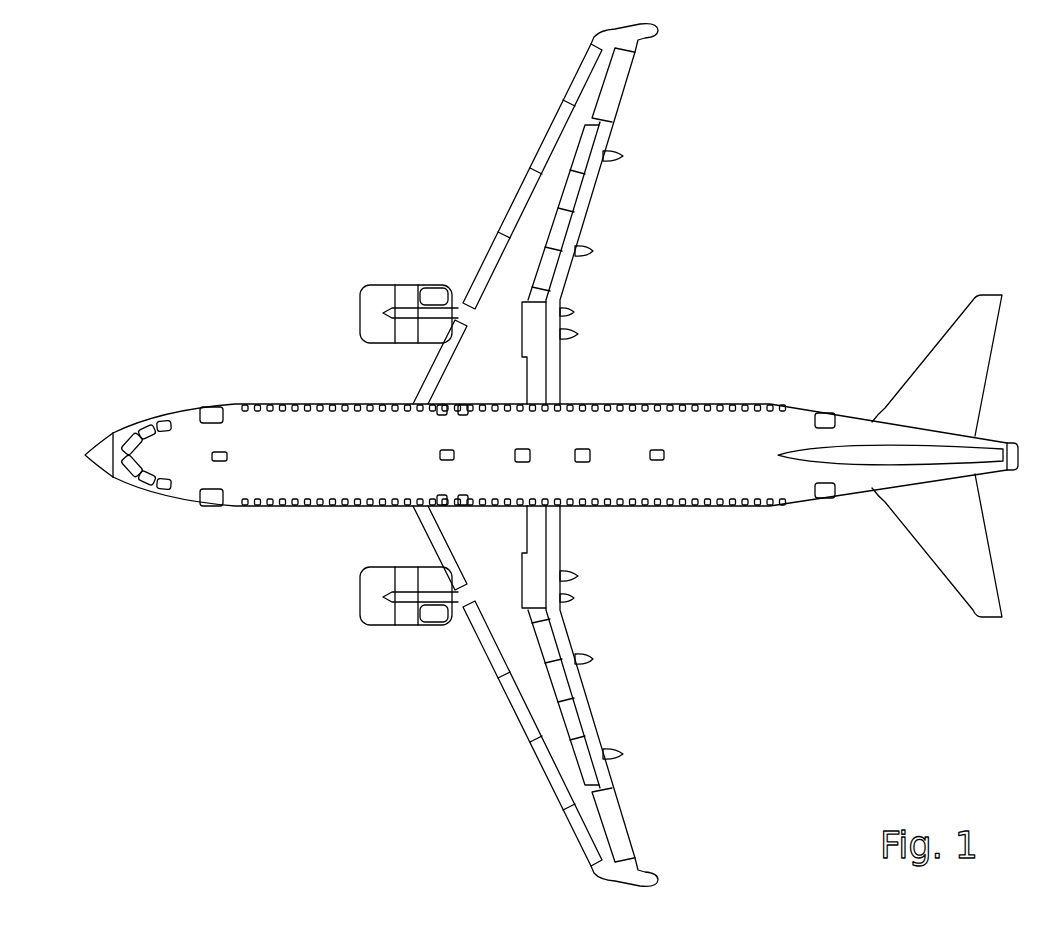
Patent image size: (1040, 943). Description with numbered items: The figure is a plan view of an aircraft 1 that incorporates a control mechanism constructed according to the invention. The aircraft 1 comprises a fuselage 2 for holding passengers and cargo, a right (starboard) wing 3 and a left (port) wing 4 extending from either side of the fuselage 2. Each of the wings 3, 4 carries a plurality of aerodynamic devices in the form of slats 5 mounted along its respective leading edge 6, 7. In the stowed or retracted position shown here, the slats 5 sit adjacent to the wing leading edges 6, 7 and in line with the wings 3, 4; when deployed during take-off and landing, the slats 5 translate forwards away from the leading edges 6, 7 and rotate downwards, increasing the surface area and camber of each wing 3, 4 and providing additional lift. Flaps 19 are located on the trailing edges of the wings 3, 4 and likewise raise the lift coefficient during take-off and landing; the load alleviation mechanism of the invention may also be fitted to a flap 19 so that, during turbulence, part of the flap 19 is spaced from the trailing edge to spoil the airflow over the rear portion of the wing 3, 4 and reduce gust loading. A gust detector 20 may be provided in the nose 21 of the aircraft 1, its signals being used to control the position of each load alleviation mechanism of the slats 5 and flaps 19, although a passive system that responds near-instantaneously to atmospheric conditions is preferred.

The aircraft 1 is at (292, 105).
The fuselage 2 is at (243, 487).
The right (starboard) wing 3 is at (523, 265).
The left (port) wing 4 is at (543, 705).
The slat 5 is at (566, 100).
The leading edge 6 is at (466, 292).
The leading edge 7 is at (470, 630).
The flap 19 is at (583, 195).
The gust detector 20 is at (102, 465).
The nose 21 is at (90, 450).